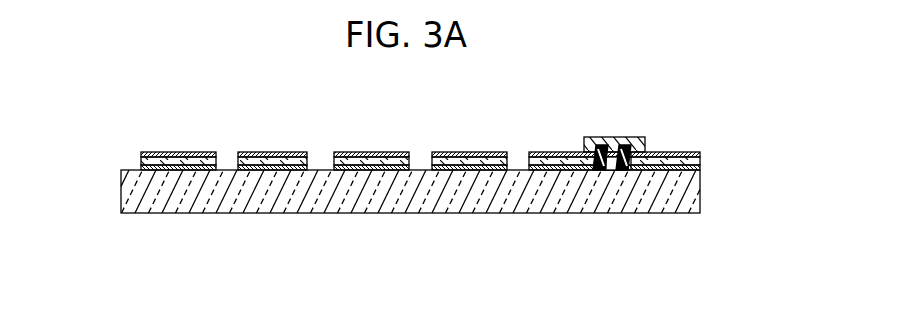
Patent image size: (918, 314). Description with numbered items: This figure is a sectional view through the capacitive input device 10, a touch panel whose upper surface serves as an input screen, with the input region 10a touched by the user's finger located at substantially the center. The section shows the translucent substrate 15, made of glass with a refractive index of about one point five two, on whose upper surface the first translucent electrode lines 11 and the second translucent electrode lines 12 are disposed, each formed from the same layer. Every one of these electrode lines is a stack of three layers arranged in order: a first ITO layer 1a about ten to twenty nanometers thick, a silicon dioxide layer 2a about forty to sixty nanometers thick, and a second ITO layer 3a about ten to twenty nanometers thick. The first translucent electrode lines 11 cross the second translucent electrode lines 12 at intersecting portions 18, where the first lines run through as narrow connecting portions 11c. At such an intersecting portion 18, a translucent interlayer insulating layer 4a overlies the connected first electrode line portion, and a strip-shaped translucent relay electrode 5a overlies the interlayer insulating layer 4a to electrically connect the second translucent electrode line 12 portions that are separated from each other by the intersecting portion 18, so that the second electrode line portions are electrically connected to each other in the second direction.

The capacitive input device 10 is at (440, 159).
The input region 10a is at (440, 192).
The first translucent electrode line 11 is at (275, 139).
The connecting portion 11c is at (614, 182).
The second translucent electrode line 12 is at (420, 177).
The first ITO layer 1a is at (348, 170).
The silicon dioxide layer 2a is at (359, 160).
The second ITO layer 3a is at (398, 157).
The translucent interlayer insulating layer 4a is at (625, 141).
The translucent relay electrode 5a is at (598, 133).
The translucent substrate 15 is at (693, 188).
The intersecting portion 18 is at (643, 184).